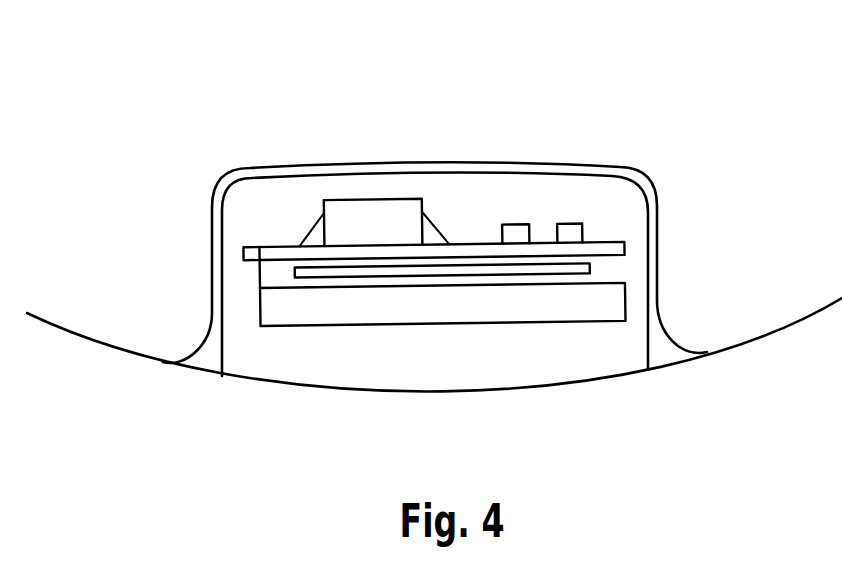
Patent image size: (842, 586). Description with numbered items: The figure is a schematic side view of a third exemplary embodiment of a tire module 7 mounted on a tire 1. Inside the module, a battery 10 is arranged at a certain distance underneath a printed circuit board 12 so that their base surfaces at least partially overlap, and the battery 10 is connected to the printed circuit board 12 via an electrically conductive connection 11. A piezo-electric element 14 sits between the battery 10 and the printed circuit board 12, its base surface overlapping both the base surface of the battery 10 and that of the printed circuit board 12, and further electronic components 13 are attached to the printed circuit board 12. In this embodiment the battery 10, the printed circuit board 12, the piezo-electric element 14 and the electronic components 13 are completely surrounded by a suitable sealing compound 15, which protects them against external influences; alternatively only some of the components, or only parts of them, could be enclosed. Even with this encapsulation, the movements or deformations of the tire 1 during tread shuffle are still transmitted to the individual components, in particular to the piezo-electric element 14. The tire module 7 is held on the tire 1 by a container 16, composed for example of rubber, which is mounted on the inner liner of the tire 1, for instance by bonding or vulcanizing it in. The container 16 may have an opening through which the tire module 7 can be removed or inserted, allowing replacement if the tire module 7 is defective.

The tire 1 is at (110, 348).
The tire module 7 is at (406, 199).
The battery 10 is at (612, 305).
The electrically conductive connection 11 is at (260, 278).
The printed circuit board 12 is at (273, 252).
The electronic components 13 is at (374, 201).
The piezo-electric element 14 is at (590, 272).
The sealing compound 15 is at (590, 353).
The container 16 is at (457, 163).